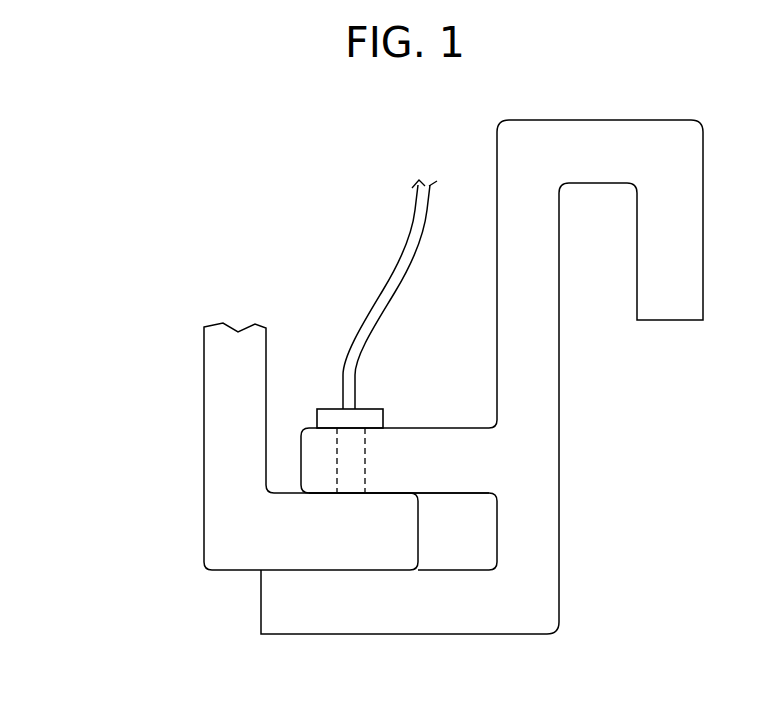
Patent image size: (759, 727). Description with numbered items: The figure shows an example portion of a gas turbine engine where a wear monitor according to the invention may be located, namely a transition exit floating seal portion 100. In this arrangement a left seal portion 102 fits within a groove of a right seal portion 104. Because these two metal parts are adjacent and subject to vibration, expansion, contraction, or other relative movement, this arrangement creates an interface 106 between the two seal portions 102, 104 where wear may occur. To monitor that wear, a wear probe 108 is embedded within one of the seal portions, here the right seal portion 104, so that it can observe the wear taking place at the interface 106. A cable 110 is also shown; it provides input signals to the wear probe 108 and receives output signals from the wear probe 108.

The transition exit floating seal portion 100 is at (275, 212).
The left seal portion 102 is at (204, 420).
The right seal portion 104 is at (560, 550).
The interface 106 is at (357, 503).
The wear probe 108 is at (366, 457).
The cable 110 is at (380, 303).